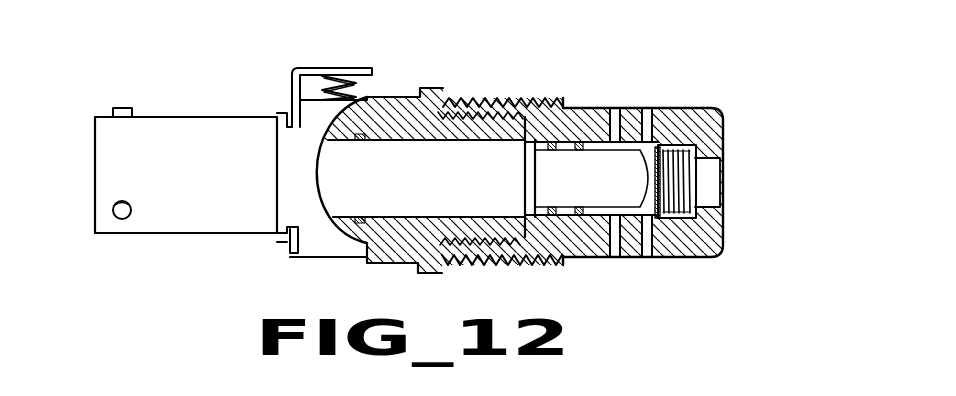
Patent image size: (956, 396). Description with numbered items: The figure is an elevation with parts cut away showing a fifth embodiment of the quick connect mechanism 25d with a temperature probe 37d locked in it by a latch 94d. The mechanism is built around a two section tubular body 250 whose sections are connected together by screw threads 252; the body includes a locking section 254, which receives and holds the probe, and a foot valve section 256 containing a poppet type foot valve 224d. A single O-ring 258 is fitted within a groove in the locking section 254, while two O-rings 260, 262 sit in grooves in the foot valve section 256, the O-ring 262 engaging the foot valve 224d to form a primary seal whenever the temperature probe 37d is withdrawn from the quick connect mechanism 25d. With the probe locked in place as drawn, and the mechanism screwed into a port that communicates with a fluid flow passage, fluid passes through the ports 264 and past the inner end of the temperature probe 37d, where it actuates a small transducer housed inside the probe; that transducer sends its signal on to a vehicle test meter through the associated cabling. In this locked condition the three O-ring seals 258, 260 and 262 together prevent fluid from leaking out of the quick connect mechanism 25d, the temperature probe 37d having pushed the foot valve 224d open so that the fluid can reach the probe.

The quick connect mechanism 25d is at (597, 71).
The temperature probe 37d is at (168, 125).
The latch 94d is at (318, 64).
The poppet type foot valve 224d is at (669, 127).
The two section tubular body 250 is at (437, 87).
The screw threads 252 is at (468, 113).
The locking section 254 is at (372, 97).
The foot valve section 256 is at (598, 108).
The O-ring 258 is at (359, 142).
The O-ring 260 is at (550, 146).
The O-ring 262 is at (578, 151).
The ports 264 is at (647, 258).